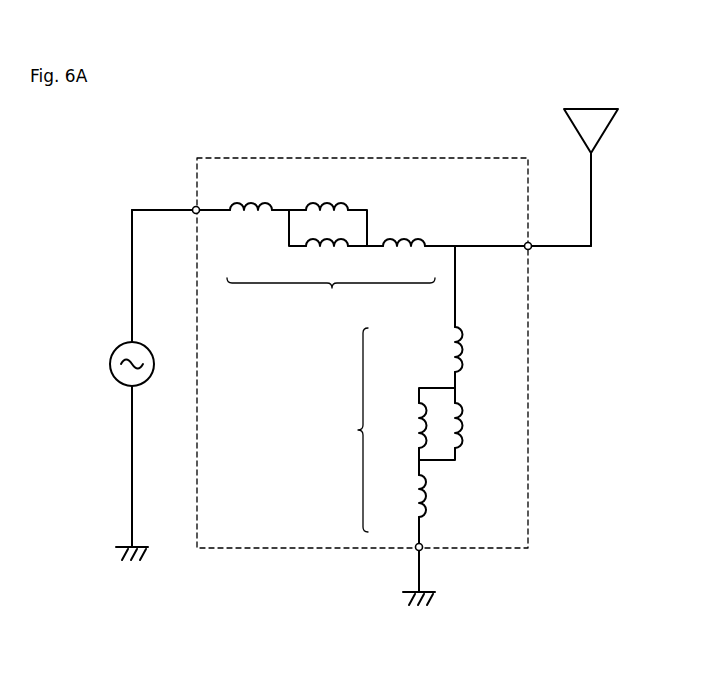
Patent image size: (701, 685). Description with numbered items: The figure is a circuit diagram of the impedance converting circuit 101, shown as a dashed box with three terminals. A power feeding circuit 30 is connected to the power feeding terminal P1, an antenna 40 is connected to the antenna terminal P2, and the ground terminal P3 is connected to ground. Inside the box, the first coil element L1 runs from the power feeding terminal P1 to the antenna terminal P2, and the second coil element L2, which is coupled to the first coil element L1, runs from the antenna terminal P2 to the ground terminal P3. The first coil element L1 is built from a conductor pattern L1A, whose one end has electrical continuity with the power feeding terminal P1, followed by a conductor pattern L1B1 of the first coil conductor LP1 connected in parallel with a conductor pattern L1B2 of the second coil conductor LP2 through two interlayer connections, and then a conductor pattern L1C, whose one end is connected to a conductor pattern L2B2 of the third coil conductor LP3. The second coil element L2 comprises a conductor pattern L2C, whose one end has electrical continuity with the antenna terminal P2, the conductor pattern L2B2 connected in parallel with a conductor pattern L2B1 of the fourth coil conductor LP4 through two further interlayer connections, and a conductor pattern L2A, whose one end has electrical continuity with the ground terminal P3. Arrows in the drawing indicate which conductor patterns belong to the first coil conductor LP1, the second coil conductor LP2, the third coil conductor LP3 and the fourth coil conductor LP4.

The impedance converting circuit 101 is at (396, 157).
The antenna 40 is at (591, 108).
The power feeding circuit 30 is at (110, 364).
The power feeding terminal P1 is at (181, 222).
The antenna terminal P2 is at (544, 259).
The ground terminal P3 is at (406, 559).
The first coil element L1 is at (331, 298).
The conductor pattern L1A is at (251, 193).
The conductor pattern L1B1 is at (327, 193).
The conductor pattern L1B2 is at (327, 258).
The conductor pattern L1C is at (404, 258).
The second coil element L2 is at (346, 430).
The conductor pattern L2A is at (401, 496).
The conductor pattern L2B1 is at (398, 425).
The conductor pattern L2B2 is at (484, 425).
The conductor pattern L2C is at (482, 349).
The first coil conductor LP1 is at (403, 198).
The second coil conductor LP2 is at (442, 232).
The third coil conductor LP3 is at (468, 482).
The fourth coil conductor LP4 is at (441, 527).